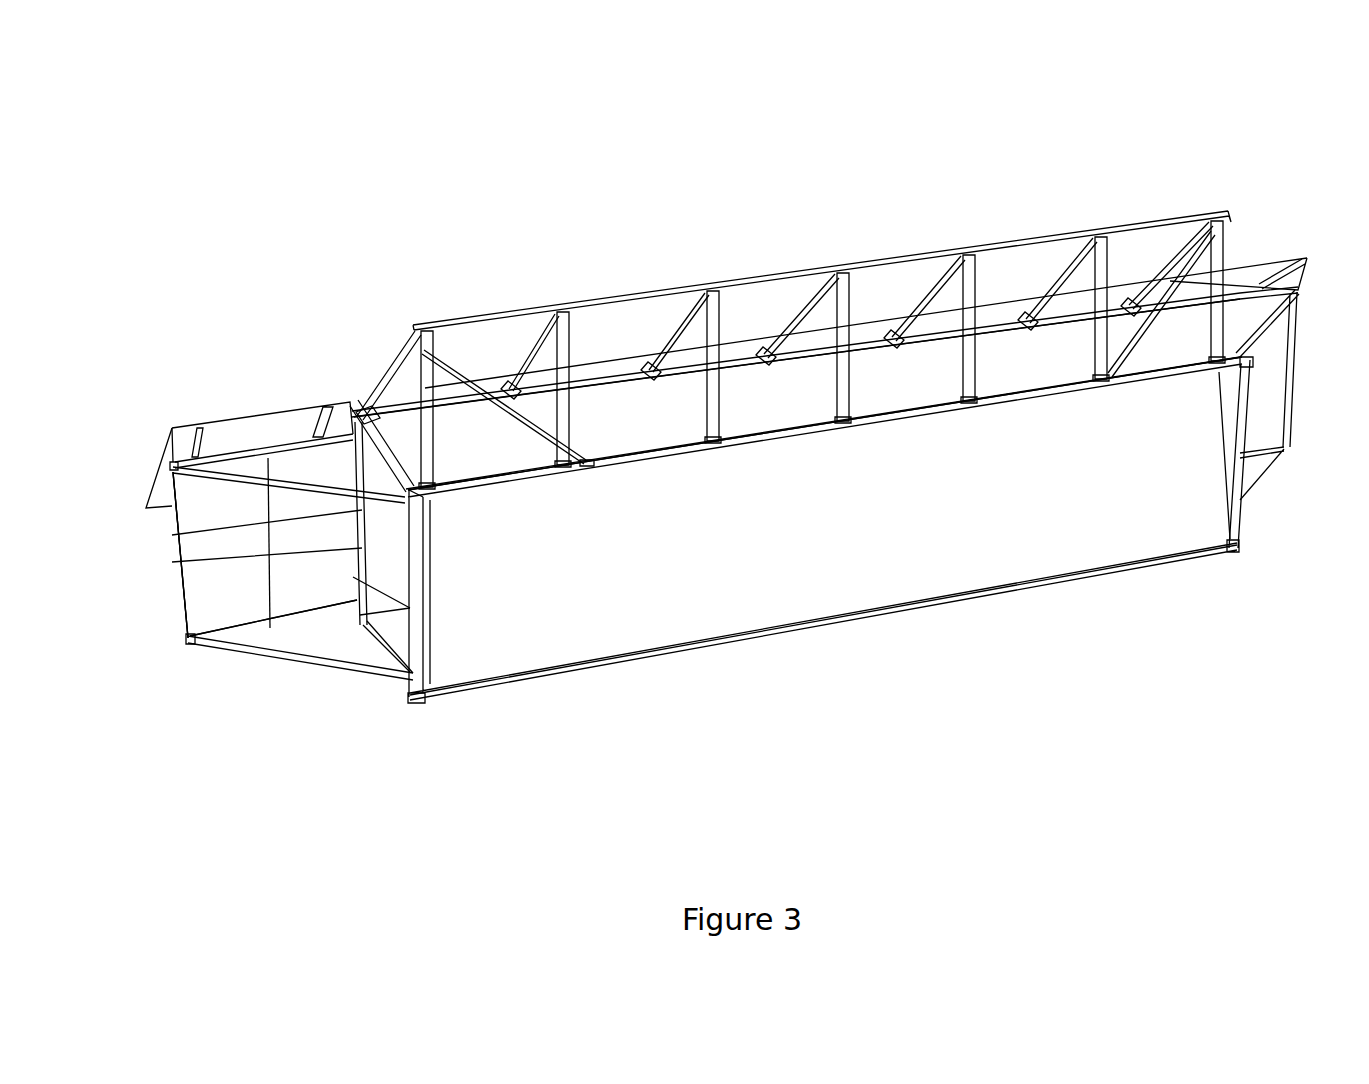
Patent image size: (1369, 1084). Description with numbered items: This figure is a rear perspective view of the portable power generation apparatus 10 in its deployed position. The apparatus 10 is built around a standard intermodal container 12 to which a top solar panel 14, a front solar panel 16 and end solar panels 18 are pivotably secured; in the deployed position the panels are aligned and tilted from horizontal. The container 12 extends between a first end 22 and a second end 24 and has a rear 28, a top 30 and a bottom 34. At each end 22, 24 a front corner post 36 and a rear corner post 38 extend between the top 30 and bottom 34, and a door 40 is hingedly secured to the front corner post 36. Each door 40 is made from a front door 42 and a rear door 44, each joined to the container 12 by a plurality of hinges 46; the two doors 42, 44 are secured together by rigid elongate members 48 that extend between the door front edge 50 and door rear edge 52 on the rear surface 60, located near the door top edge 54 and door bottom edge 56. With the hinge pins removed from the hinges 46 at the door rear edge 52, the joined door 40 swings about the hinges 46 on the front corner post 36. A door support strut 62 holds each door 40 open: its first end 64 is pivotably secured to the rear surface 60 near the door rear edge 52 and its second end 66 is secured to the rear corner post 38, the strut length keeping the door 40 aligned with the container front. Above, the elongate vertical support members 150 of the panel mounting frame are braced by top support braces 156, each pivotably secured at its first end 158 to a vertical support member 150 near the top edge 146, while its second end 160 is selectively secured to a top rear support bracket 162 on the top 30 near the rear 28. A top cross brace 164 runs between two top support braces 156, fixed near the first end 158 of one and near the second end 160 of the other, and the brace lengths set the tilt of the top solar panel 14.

The apparatus for portable power generation 10 is at (1160, 130).
The container 12 is at (1147, 527).
The top solar panel 14 is at (780, 275).
The front solar panel 16 is at (378, 473).
The end solar panel 18 is at (270, 412).
The first end 22 is at (1260, 537).
The second end 24 is at (394, 702).
The rear 28 is at (918, 570).
The top 30 is at (913, 388).
The bottom 34 is at (790, 632).
The front corner post 36 is at (290, 603).
The rear corner post 38 is at (420, 653).
The door 40 is at (180, 600).
The front door 42 is at (290, 600).
The rear door 44 is at (235, 615).
The hinges 46 is at (183, 580).
The rigid elongate member 48 is at (305, 445).
The door front edge 50 is at (365, 412).
The door rear edge 52 is at (182, 613).
The door top edge 54 is at (231, 446).
The door bottom edge 56 is at (330, 620).
The rear surface 60 is at (208, 486).
The door support strut 62 is at (173, 462).
The first end 64 is at (172, 468).
The second end 66 is at (422, 503).
The top edge 146 is at (724, 286).
The elongate vertical support members 150 is at (422, 385).
The top support brace 156 is at (578, 318).
The first end 158 is at (455, 395).
The second end 160 is at (450, 480).
The top rear support bracket 162 is at (588, 463).
The top cross brace 164 is at (483, 395).